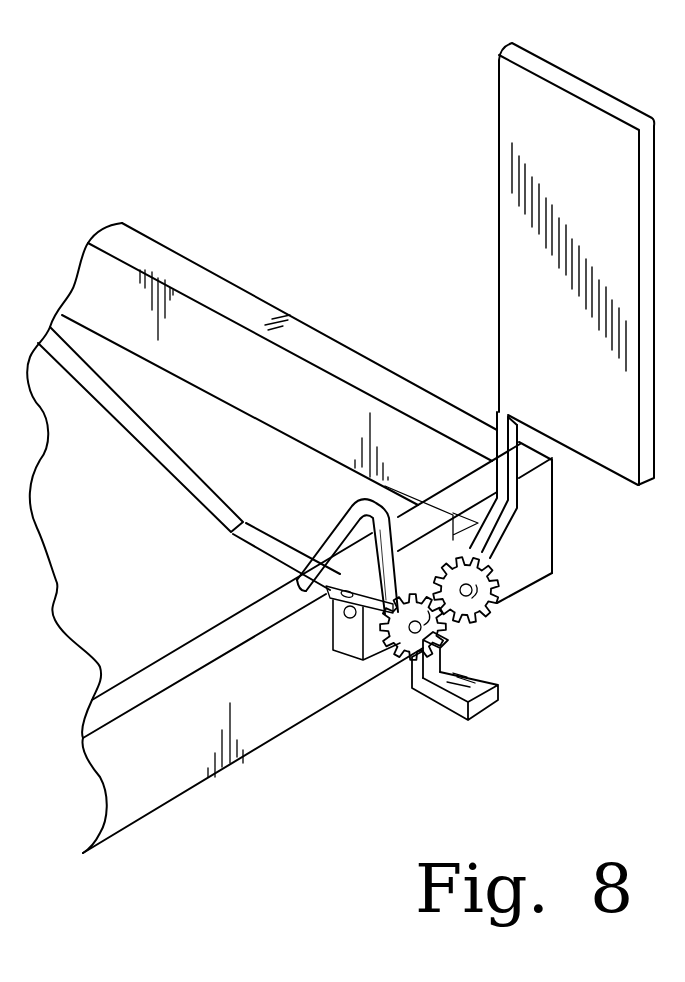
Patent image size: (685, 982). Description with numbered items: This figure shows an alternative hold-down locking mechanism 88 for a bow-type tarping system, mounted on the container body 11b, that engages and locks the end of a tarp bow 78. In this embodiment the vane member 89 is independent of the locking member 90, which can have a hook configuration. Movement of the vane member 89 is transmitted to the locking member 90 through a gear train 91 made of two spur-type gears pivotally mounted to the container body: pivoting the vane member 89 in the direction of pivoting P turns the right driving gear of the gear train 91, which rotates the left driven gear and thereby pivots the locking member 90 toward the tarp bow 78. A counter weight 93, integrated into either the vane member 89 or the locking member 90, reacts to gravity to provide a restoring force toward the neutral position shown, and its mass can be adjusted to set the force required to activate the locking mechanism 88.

The lower frame member 11b is at (180, 707).
The tarp bow 78 is at (145, 447).
The locking mechanism 88 is at (560, 612).
The vane member 89 is at (498, 284).
The locking member 90 is at (350, 507).
The gear train 91 is at (420, 639).
The counter weight 93 is at (487, 709).
The direction of pivoting P is at (484, 113).